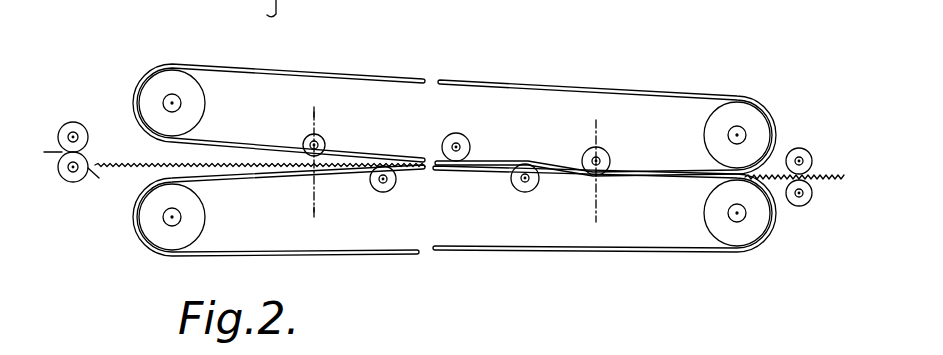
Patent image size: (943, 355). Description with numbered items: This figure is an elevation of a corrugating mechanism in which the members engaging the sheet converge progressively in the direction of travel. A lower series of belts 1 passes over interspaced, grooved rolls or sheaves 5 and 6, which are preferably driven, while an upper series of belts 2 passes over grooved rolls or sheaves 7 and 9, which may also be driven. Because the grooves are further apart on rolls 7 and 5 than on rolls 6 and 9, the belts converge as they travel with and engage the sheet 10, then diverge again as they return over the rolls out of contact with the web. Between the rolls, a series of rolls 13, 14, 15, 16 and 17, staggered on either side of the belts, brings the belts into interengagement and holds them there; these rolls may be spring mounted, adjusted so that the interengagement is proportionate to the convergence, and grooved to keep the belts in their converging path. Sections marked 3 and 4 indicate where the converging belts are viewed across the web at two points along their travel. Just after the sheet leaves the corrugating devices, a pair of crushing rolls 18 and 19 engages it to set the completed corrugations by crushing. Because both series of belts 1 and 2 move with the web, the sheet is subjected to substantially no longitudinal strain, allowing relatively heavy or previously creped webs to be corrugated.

The lower series of belts 1 is at (498, 254).
The upper series of belts 2 is at (541, 88).
The section line 3- 3 is at (318, 112).
The section line 4- 4 is at (596, 120).
The roll or sheave 5 is at (162, 240).
The roll or sheave 6 is at (748, 243).
The roll or sheave 7 is at (168, 86).
The roll or sheave 9 is at (738, 108).
The sheet 10 is at (117, 160).
The roll 13 is at (326, 147).
The roll 14 is at (392, 190).
The roll 15 is at (466, 140).
The roll 16 is at (527, 192).
The roll 17 is at (610, 160).
The crushing roll 18 is at (801, 148).
The crushing roll 19 is at (799, 206).